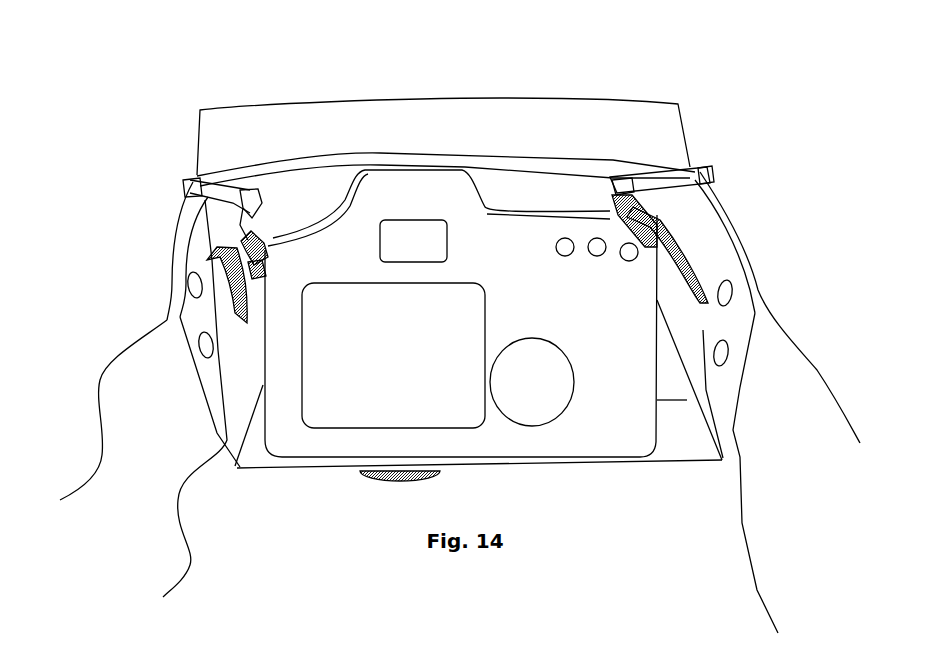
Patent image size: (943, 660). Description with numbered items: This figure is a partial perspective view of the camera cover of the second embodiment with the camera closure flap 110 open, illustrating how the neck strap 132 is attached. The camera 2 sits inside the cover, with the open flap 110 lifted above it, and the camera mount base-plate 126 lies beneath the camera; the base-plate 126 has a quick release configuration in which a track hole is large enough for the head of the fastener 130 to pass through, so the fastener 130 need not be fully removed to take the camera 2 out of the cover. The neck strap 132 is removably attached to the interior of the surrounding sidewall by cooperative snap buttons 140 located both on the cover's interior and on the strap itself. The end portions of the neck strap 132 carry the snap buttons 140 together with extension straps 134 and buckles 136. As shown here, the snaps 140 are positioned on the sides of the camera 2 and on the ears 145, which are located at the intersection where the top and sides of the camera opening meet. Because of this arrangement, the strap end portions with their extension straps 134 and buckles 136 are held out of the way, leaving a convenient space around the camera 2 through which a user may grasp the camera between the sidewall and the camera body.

The camera 2 is at (503, 437).
The camera closure flap 110 is at (232, 135).
The camera mount base-plate 126 is at (683, 434).
The fastener 130 is at (398, 478).
The neck strap 132 is at (790, 442).
The extension straps 134 is at (237, 322).
The buckles 136 is at (610, 197).
The snap buttons 140 is at (207, 348).
The ears 145 is at (248, 192).